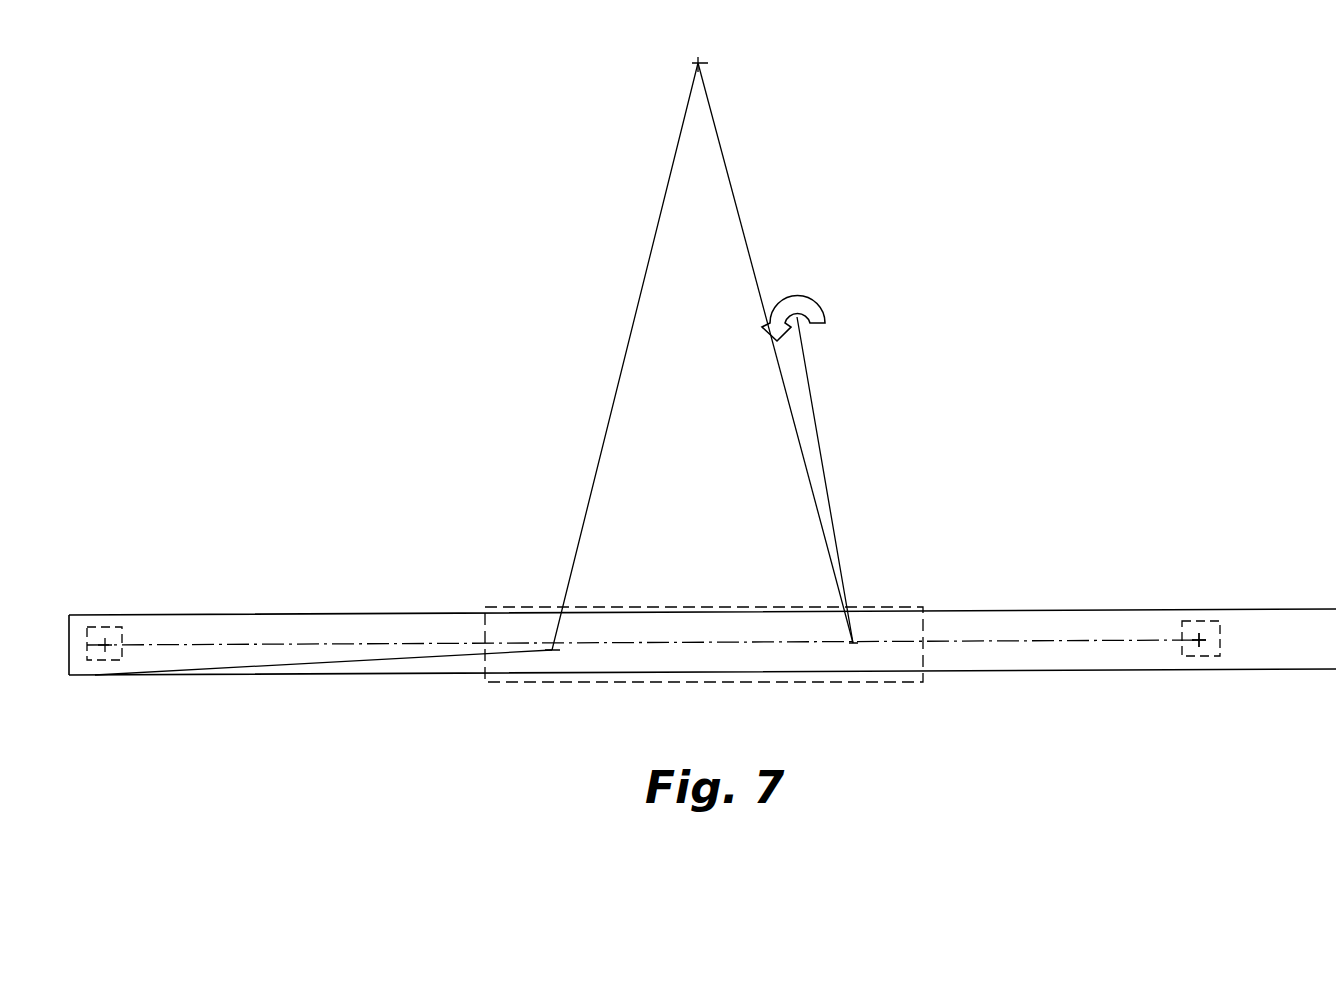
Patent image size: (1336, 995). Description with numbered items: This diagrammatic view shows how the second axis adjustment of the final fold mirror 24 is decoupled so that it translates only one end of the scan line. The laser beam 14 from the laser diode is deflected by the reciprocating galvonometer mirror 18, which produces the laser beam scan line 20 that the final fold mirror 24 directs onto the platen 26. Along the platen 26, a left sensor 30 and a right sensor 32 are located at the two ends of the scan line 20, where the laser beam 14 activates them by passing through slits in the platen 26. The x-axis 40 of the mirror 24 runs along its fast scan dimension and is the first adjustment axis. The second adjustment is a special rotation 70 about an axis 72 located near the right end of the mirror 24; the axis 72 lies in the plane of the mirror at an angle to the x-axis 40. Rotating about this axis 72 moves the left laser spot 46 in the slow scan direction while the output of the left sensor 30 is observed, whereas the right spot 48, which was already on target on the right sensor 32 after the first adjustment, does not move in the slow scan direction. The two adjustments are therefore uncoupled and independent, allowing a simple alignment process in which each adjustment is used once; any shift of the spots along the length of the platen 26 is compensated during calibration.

The laser beam 14 is at (747, 243).
The reciprocating galvonometer mirror 18 is at (697, 62).
The laser beam scan line 20 is at (641, 288).
The final fold mirror 24 is at (872, 607).
The platen 26 is at (393, 675).
The sensor 30 is at (110, 628).
The sensor 32 is at (1210, 653).
The x-axis 40 is at (738, 647).
The left laser spot 46 is at (94, 676).
The right spot 48 is at (1197, 638).
The axis of rotation 70 is at (812, 312).
The axis 72 is at (813, 392).